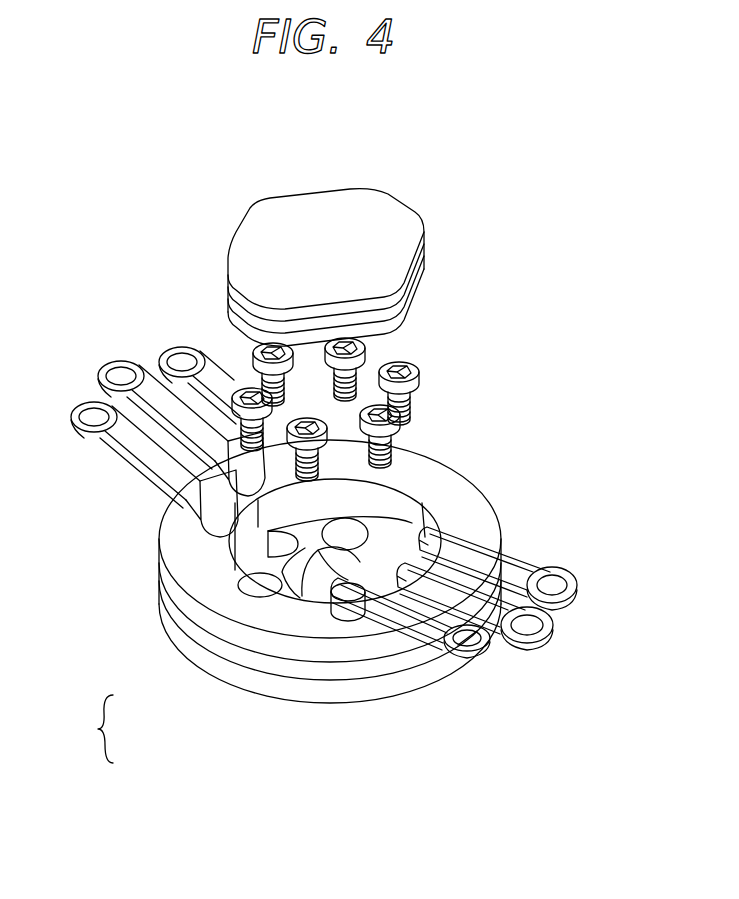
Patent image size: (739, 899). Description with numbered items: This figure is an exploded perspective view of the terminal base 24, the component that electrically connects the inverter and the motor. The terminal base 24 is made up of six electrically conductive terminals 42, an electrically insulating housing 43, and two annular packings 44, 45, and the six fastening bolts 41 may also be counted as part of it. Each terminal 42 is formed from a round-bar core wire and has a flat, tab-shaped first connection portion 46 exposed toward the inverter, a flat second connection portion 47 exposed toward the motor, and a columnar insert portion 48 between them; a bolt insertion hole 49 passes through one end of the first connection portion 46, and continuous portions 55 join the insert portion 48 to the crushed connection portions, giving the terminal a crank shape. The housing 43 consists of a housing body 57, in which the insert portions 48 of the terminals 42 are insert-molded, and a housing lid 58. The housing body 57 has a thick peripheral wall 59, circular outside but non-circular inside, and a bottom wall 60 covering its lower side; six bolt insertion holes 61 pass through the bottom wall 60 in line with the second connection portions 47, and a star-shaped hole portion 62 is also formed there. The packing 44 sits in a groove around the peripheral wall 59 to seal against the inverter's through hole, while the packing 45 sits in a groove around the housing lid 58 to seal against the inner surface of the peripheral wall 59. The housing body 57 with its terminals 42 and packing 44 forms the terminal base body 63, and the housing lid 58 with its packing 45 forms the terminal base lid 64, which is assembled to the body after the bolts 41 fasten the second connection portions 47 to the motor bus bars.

The terminal base 24 is at (557, 391).
The fastening bolt 41 is at (403, 367).
The terminal 42 is at (153, 476).
The housing 43 is at (90, 729).
The packing 44 is at (164, 618).
The packing 45 is at (233, 313).
The first connection portion 46 is at (390, 613).
The second connection portion 47 is at (307, 653).
The insert portion 48 is at (350, 627).
The bolt insertion hole 49 is at (480, 653).
The continuous portion 55 is at (345, 600).
The housing body 57 is at (437, 732).
The housing lid 58 is at (267, 450).
The peripheral wall 59 is at (443, 467).
The bottom wall 60 is at (440, 478).
The bolt insertion hole 61 is at (350, 522).
The hole portion 62 is at (278, 562).
The terminal base body 63 is at (435, 456).
The terminal base lid 64 is at (297, 217).